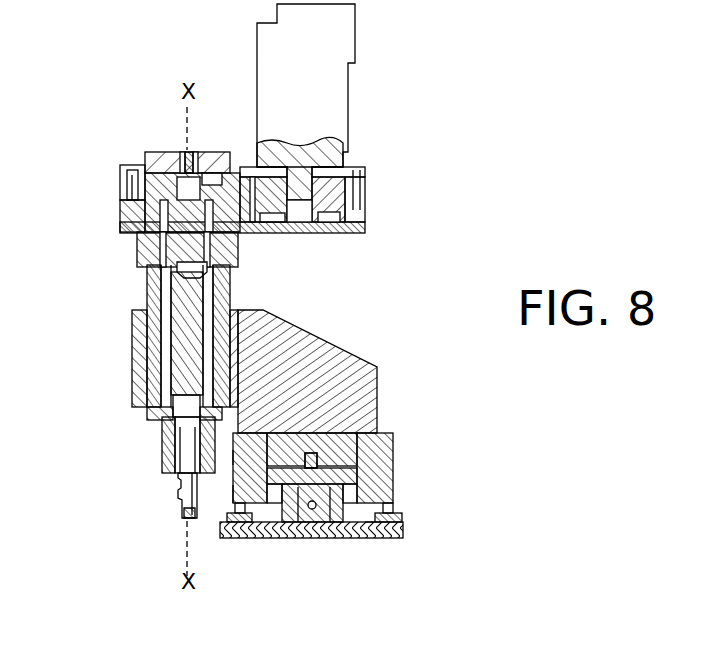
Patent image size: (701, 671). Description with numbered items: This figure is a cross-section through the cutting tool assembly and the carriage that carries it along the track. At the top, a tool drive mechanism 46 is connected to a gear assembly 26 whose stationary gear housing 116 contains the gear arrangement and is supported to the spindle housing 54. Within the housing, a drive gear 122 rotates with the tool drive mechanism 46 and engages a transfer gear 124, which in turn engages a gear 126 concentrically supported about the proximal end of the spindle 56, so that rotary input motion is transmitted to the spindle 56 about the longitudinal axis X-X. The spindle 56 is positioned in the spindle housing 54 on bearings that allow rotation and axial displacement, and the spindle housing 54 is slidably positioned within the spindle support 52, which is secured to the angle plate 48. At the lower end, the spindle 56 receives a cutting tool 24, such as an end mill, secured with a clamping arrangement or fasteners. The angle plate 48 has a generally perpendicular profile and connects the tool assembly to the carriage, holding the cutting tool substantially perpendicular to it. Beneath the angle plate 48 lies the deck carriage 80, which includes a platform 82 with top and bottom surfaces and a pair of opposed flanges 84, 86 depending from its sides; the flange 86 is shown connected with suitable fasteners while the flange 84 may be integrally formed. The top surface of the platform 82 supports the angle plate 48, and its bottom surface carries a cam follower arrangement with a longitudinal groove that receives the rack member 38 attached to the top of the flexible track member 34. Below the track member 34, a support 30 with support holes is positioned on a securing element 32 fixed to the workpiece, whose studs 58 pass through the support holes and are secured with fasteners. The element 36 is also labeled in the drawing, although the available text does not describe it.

The nozzle tip 24 is at (180, 496).
The cap 26 is at (158, 150).
The base plate 30 is at (405, 527).
The fastener 32 is at (370, 530).
The fastener 34 is at (330, 487).
The fastener 36 is at (682, 665).
The fastener 38 is at (298, 487).
The actuator body 46 is at (338, 87).
The support block 48 is at (320, 362).
The housing 52 is at (133, 345).
The sleeve 54 is at (145, 283).
The bore 56 is at (180, 367).
The spacer 58 is at (393, 510).
The guide 80 is at (233, 458).
The pin 82 is at (287, 455).
The bracket 84 is at (232, 495).
The mounting block 86 is at (393, 470).
The flange 116 is at (247, 167).
The mounting plate 122 is at (367, 212).
The bore 124 is at (247, 233).
The bolt 126 is at (120, 207).